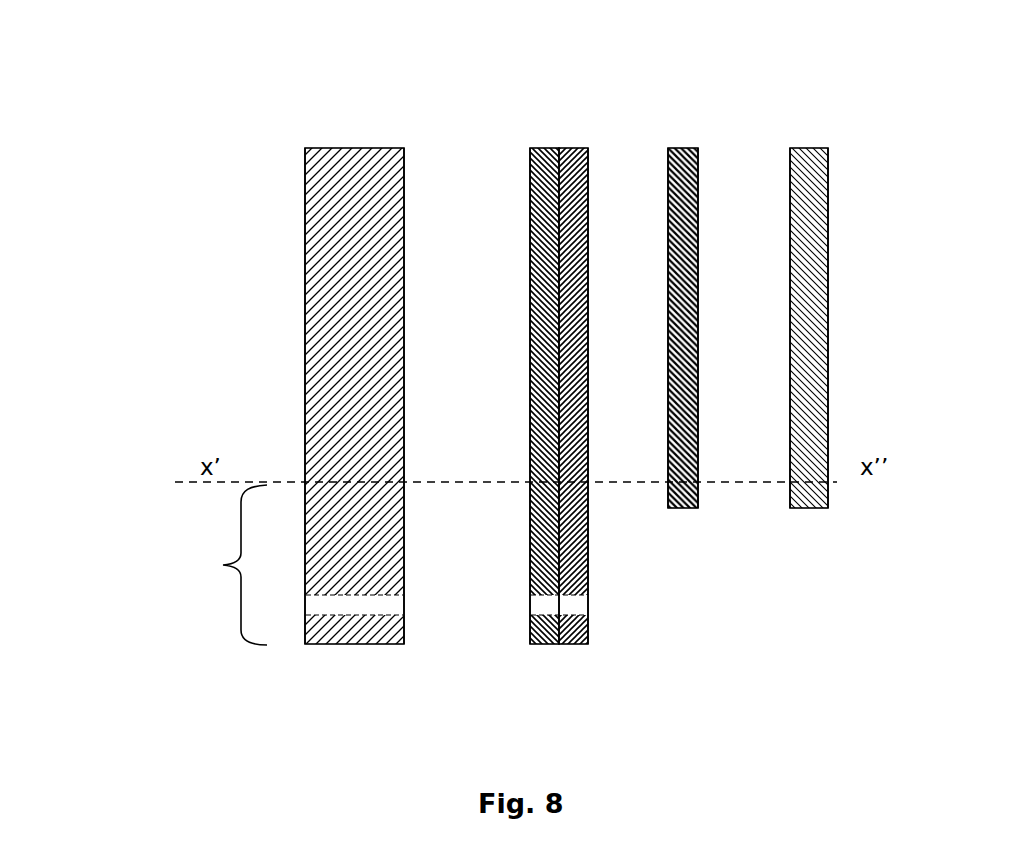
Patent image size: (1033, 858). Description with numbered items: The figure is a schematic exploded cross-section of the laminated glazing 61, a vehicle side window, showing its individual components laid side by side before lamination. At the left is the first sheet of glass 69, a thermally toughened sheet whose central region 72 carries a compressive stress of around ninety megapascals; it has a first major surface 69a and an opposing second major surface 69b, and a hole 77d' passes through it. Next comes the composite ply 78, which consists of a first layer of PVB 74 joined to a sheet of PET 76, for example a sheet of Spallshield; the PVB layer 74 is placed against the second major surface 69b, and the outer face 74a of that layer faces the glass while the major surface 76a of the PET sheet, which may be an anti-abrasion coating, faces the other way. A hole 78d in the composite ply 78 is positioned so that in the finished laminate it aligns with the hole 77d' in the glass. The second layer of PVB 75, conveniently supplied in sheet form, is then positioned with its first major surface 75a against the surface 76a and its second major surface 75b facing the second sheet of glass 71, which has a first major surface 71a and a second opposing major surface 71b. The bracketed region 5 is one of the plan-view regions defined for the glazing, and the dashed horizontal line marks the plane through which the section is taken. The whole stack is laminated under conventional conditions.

The laminated glazing 61 is at (160, 153).
The first sheet of glass 69 is at (358, 162).
The first major surface of the first sheet of glass 69a is at (300, 197).
The second major surface of the first sheet of glass 69b is at (409, 175).
The central region 72 is at (228, 327).
The first layer of PVB 74 is at (540, 170).
The outer side of first layer 74a is at (524, 338).
The sheet of PET 76 is at (574, 157).
The major surface of the sheet of PET 76a is at (593, 542).
The composite ply 78 is at (553, 120).
The hole in the composite ply 78d is at (598, 607).
The hole in the first sheet of glass 77d' is at (430, 644).
The second layer of PVB 75 is at (683, 160).
The first major surface of the second layer of PVB 75a is at (663, 243).
The second major surface of the second layer of PVB 75b is at (702, 300).
The second sheet of glass 71 is at (815, 243).
The first major surface of the second sheet of glass 71a is at (786, 175).
The second major surface of the second sheet of glass 71b is at (833, 193).
The region 5 is at (223, 564).